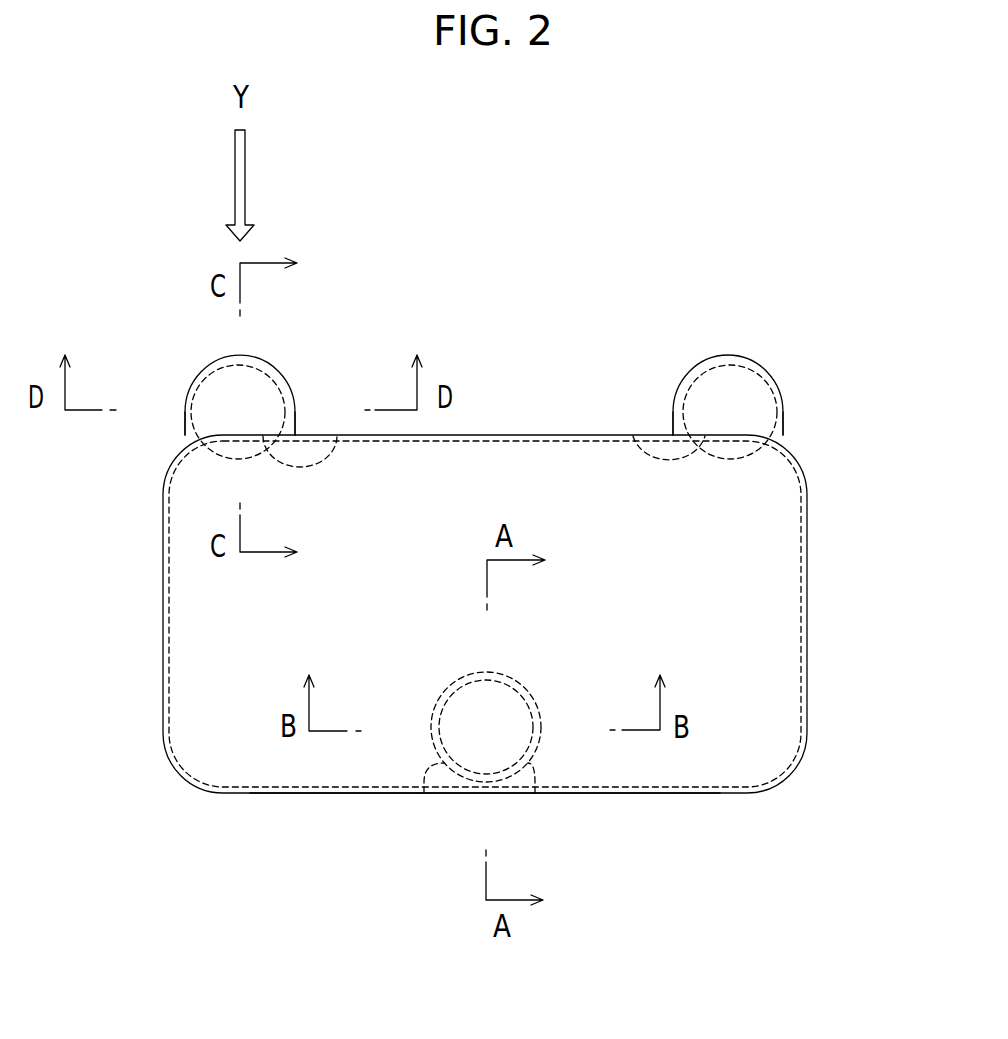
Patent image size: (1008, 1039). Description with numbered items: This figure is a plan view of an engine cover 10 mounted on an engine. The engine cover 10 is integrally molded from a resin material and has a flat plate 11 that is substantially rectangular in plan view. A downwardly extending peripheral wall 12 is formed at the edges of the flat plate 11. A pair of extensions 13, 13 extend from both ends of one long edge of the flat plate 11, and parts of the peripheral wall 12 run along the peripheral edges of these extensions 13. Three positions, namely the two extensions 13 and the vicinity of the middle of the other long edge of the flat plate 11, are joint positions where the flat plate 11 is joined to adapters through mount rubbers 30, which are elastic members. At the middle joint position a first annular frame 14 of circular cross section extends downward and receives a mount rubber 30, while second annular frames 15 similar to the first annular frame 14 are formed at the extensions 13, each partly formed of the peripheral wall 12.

The engine cover 10 is at (822, 591).
The flat plate 11 is at (760, 740).
The peripheral wall 12 is at (187, 418).
The extension 13 is at (219, 388).
The first annular frame 14 is at (424, 793).
The second annular frame 15 is at (336, 436).
The mount rubber 30 is at (282, 372).